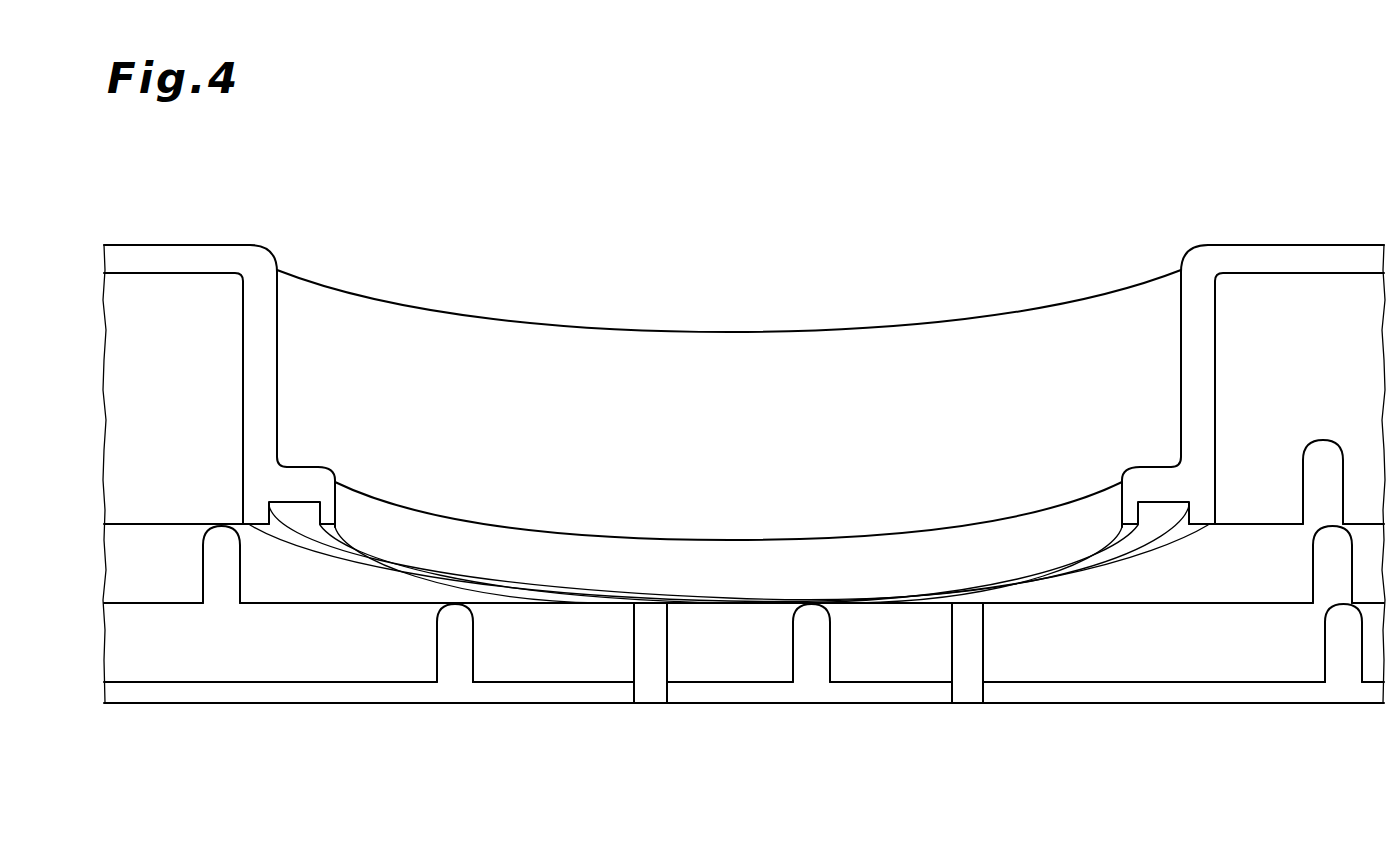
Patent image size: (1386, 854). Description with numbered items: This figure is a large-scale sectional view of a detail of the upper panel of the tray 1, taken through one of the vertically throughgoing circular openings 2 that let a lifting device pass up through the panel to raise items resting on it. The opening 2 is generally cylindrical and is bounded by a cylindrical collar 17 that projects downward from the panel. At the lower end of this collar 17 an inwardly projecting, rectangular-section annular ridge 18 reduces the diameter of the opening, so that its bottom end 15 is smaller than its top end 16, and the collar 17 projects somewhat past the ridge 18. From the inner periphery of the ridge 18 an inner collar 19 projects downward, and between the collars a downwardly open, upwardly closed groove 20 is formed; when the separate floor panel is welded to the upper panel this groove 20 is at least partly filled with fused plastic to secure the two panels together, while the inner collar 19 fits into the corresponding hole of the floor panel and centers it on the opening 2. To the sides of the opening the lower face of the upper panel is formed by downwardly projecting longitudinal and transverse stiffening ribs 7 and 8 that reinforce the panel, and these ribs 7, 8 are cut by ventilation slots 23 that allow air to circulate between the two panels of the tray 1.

The tray 1 is at (632, 149).
The opening 2 is at (921, 241).
The longitudinal stiffening rib 7 is at (407, 640).
The transverse stiffening rib 8 is at (649, 648).
The bottom end 15 is at (730, 607).
The top end 16 is at (333, 287).
The cylindrical collar 17 is at (467, 340).
The annular ridge 18 is at (305, 467).
The inner collar 19 is at (326, 512).
The groove 20 is at (294, 513).
The ventilation slot 23 is at (220, 580).